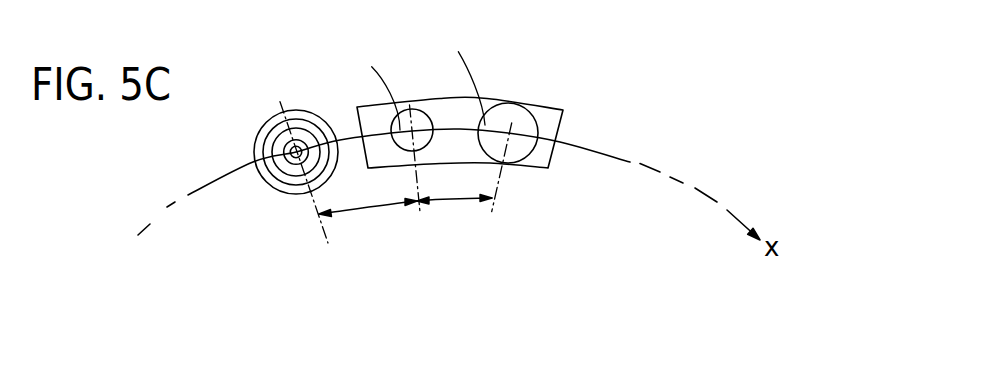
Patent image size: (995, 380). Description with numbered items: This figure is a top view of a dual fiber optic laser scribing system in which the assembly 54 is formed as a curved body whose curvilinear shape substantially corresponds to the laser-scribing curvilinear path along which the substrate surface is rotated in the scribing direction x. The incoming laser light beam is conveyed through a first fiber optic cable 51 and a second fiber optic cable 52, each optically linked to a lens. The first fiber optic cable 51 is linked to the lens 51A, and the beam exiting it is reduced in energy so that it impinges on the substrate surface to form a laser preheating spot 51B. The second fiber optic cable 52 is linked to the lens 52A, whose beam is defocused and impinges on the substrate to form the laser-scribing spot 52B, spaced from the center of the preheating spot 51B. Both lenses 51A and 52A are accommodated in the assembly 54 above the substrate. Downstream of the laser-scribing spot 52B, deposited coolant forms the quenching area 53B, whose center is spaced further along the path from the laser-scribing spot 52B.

The first fiber optic cable 51 is at (528, 127).
The lens 51A is at (533, 120).
The laser preheating spot 51B is at (531, 165).
The second fiber optic cable 52 is at (425, 127).
The lens 52A is at (391, 135).
The laser-scribing spot 52B is at (412, 154).
The quenching area 53B is at (279, 203).
The assembly 54 is at (565, 118).